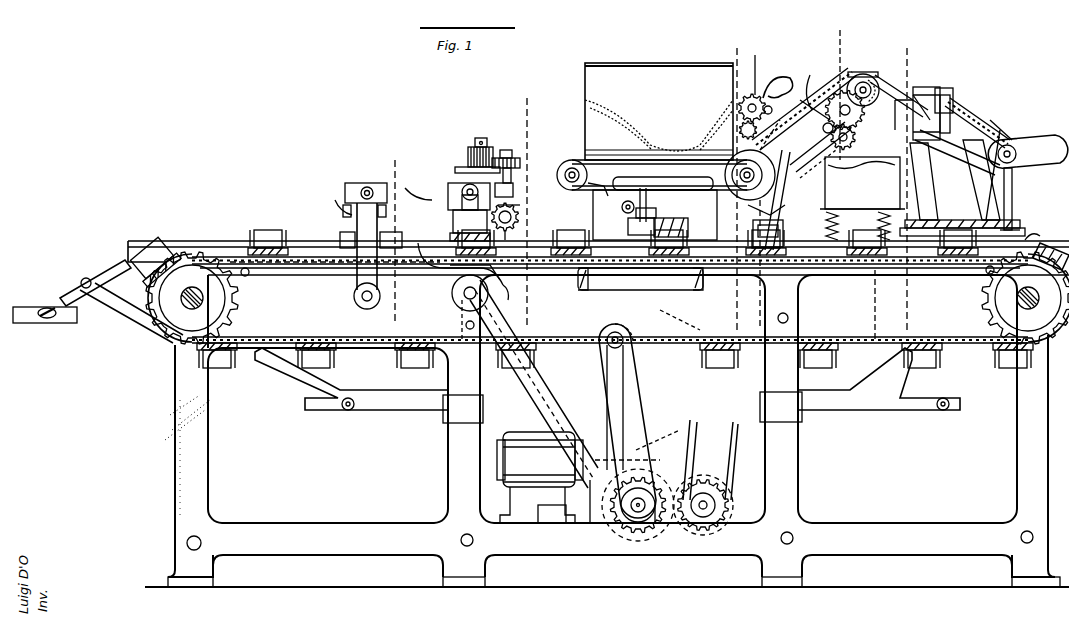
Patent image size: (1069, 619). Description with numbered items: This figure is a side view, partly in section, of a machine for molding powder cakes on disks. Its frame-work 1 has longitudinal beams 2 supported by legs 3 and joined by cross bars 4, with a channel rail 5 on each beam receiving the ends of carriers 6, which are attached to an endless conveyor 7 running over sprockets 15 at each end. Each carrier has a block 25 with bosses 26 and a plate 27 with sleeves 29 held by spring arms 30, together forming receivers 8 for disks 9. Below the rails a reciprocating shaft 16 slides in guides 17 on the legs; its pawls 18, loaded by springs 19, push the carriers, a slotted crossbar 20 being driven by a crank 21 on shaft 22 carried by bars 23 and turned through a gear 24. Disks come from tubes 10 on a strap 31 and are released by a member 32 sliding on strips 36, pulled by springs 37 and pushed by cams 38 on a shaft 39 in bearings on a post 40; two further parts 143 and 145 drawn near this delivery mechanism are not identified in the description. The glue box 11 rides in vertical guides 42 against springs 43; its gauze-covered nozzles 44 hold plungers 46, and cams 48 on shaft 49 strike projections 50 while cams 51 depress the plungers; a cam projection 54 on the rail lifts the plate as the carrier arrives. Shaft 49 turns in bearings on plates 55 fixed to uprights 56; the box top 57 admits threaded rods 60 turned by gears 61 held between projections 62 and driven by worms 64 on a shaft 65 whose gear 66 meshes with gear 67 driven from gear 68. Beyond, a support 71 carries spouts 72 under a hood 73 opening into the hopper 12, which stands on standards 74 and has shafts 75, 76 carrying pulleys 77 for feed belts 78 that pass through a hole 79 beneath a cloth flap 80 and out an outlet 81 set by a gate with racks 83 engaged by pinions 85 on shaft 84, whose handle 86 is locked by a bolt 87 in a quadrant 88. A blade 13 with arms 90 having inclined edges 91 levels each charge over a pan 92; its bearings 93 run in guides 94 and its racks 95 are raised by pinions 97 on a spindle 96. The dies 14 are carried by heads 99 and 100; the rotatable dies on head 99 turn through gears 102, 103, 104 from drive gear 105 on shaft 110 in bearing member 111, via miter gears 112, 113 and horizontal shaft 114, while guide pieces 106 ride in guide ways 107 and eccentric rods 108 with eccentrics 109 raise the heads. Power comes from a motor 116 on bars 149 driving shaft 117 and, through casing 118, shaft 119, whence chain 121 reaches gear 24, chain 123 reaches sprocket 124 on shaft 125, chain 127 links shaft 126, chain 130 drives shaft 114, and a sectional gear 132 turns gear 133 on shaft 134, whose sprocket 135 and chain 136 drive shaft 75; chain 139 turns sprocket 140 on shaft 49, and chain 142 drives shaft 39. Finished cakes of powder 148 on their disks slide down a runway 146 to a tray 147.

The frame-work 1 is at (1033, 500).
The longitudinal beams 2 is at (280, 268).
The legs 3 is at (178, 480).
The cross bars 4 is at (200, 540).
The rail 5 is at (240, 243).
The carriers 6 is at (884, 52).
The conveyor 7 is at (336, 316).
The receivers 8 is at (1051, 251).
The disks 9 is at (272, 232).
The tubes 10 is at (953, 100).
The glue box 11 is at (862, 183).
The hopper 12 is at (659, 111).
The blade 13 is at (650, 214).
The dies 14 is at (372, 196).
The sprockets 15 is at (215, 300).
The reciprocating shaft 16 is at (884, 400).
The horizontal guides 17 is at (448, 412).
The one-way acting pawls 18 is at (312, 398).
The springs 19 is at (354, 400).
The slotted crossbar 20 is at (630, 420).
The crank 21 is at (606, 338).
The shaft 22 is at (565, 405).
The bars 23 is at (575, 380).
The gear 24 is at (540, 410).
The block 25 is at (568, 262).
The circular projections 26 is at (770, 248).
The plate 27 is at (700, 330).
The annular sleeves 29 is at (160, 252).
The spring arms 30 is at (150, 278).
The metal strap 31 is at (926, 113).
The member 32 is at (962, 221).
The longitudinal strips 36 is at (1028, 236).
The springs 37 is at (1012, 215).
The cams 38 is at (1028, 151).
The shaft 39 is at (1008, 145).
The post 40 is at (1012, 182).
The vertical guides 42 is at (834, 248).
The springs 43 is at (930, 222).
The outlet nozzles 44 is at (985, 120).
The plungers 46 is at (903, 121).
The cams 48 is at (835, 78).
The shaft 49 is at (899, 89).
The projections 50 is at (946, 99).
The cams 51 is at (917, 92).
The cam projection 54 is at (795, 250).
The plates 55 is at (830, 105).
The uprights 56 is at (794, 182).
The top of the box 57 is at (800, 155).
The threaded rods 60 is at (957, 149).
The gears 61 is at (806, 109).
The projections 62 is at (977, 118).
The worms 64 is at (805, 162).
The shaft 65 is at (822, 127).
The gear 66 is at (830, 136).
The gear 67 is at (808, 83).
The gear 68 is at (862, 73).
The support 71 is at (757, 280).
The spouts 72 is at (754, 186).
The curved hood 73 is at (752, 160).
The standards 74 is at (717, 213).
The shaft 75 is at (705, 140).
The shaft 76 is at (562, 170).
The pulleys 77 is at (728, 150).
The feed belts 78 is at (660, 145).
The hole 79 is at (580, 160).
The flap of cloth 80 is at (618, 140).
The outlet 81 is at (722, 142).
The vertical racks 83 is at (756, 69).
The shaft 84 is at (778, 75).
The pinions 85 is at (728, 56).
The handle 86 is at (773, 106).
The bolt 87 is at (758, 100).
The quadrant 88 is at (790, 78).
The arms 90 is at (630, 230).
The edges 91 is at (684, 232).
The pan 92 is at (660, 289).
The bearings 93 is at (647, 203).
The vertical guides 94 is at (663, 178).
The racks 95 is at (672, 155).
The spindle 96 is at (599, 183).
The pinions 97 is at (622, 207).
The head 99 is at (457, 212).
The head 100 is at (362, 182).
The gears 102 is at (468, 160).
The gear 103 is at (512, 175).
The gear 104 is at (487, 142).
The drive gear 105 is at (515, 160).
The guide pieces 106 is at (355, 227).
The guide ways 107 is at (404, 246).
The eccentric rods 108 is at (355, 275).
The eccentrics 109 is at (352, 300).
The vertical shaft 110 is at (508, 150).
The bearing member 111 is at (514, 189).
The miter gear 112 is at (520, 206).
The miter gear 113 is at (520, 228).
The horizontal shaft 114 is at (520, 216).
The electric motor 116 is at (540, 477).
The shaft 117 is at (610, 501).
The casing 118 is at (612, 512).
The shaft 119 is at (637, 508).
The chain 121 is at (658, 437).
The chain 123 is at (527, 330).
The sprocket 124 is at (467, 326).
The shaft 125 is at (462, 345).
The shaft 126 is at (368, 309).
The chain 127 is at (395, 315).
The chain 130 is at (517, 287).
The sectional gear 132 is at (664, 530).
The gear 133 is at (700, 530).
The shaft 134 is at (735, 452).
The sprocket 135 is at (726, 485).
The chain 136 is at (708, 427).
The chain 139 is at (840, 88).
The sprocket 140 is at (869, 67).
The chain 142 is at (938, 181).
The bar 143 is at (981, 180).
The hook 145 is at (1040, 236).
The runway 146 is at (118, 310).
The tray 147 is at (28, 323).
The powder 148 is at (47, 306).
The bars 149 is at (554, 496).